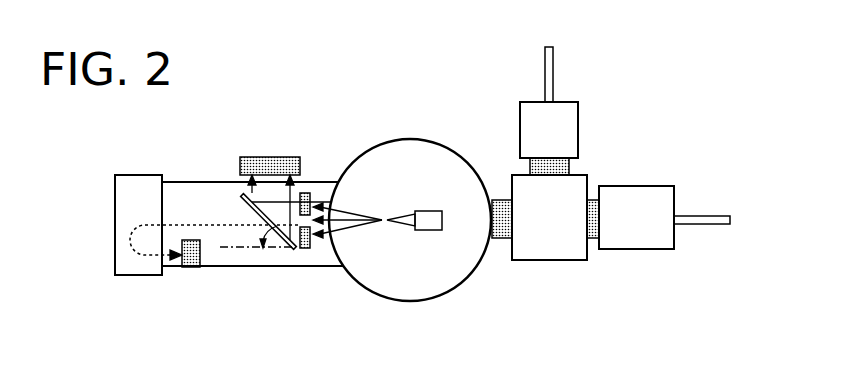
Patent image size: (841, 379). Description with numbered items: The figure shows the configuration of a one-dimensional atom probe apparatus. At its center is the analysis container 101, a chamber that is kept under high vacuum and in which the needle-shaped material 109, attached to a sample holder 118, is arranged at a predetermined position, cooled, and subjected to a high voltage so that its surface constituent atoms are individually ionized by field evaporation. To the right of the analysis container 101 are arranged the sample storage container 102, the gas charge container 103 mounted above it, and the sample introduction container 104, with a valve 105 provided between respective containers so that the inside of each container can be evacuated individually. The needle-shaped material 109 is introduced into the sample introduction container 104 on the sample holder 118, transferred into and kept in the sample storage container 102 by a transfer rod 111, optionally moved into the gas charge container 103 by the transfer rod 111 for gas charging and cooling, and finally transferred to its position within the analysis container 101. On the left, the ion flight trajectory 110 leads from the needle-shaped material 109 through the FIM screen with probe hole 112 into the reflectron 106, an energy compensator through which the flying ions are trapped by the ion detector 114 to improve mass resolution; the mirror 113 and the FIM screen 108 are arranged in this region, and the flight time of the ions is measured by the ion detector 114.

The analysis container 101 is at (405, 137).
The sample storage container 102 is at (550, 262).
The gas charge container 103 is at (578, 125).
The sample introduction container 104 is at (655, 250).
The valve 105 is at (569, 168).
The reflectron 106 is at (115, 192).
The FIM screen 108 is at (240, 163).
The needle-shaped material 109 is at (398, 227).
The ion flight trajectory 110 is at (130, 240).
The transfer rod 111 is at (553, 66).
The FIM screen with probe hole 112 is at (307, 251).
The mirror 113 is at (277, 251).
The ion detector 114 is at (193, 268).
The sample holder 118 is at (425, 209).